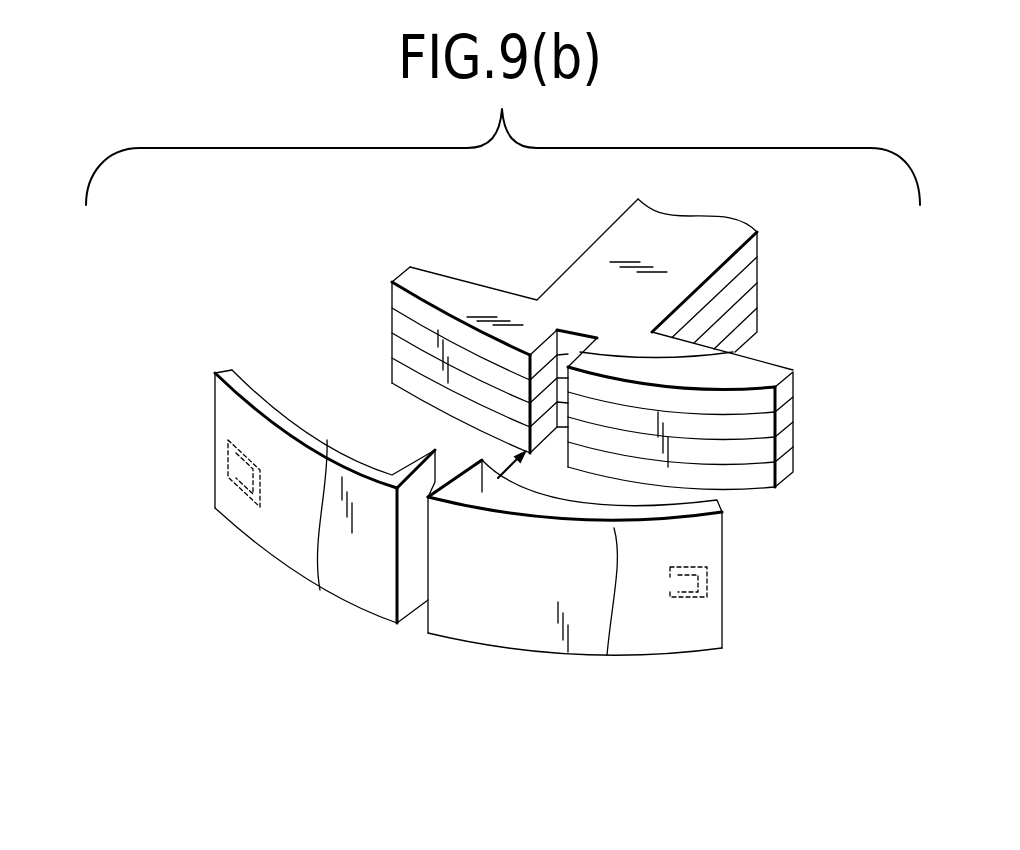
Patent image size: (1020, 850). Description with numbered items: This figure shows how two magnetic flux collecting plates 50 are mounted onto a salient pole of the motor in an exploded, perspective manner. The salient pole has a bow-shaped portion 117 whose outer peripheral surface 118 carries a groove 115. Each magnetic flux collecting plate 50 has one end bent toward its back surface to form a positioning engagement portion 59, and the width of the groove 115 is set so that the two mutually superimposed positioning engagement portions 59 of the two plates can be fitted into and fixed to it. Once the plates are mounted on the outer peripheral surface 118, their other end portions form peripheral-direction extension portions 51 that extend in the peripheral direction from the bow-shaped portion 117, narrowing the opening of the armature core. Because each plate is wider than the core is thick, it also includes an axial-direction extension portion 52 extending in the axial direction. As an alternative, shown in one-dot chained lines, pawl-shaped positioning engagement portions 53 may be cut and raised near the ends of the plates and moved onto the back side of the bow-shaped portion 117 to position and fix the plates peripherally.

The groove 115 is at (733, 352).
The bow-shaped portion 117 is at (493, 308).
The outer peripheral surface 118 is at (742, 421).
The magnetic flux collecting plate 50 is at (491, 535).
The peripheral-direction extension portion 51 is at (228, 413).
The axial-direction extension portion 52 is at (311, 459).
The pawl-shaped positioning engagement portion 53 is at (228, 468).
The positioning engagement portion 59 is at (474, 484).